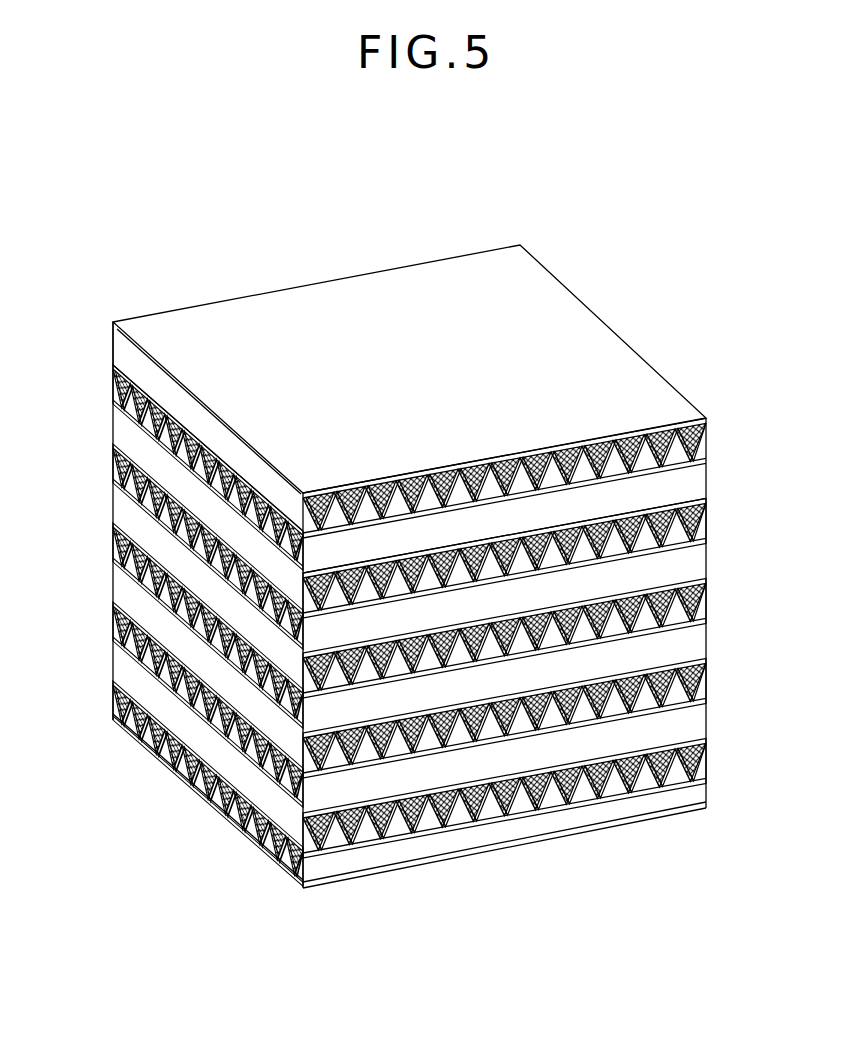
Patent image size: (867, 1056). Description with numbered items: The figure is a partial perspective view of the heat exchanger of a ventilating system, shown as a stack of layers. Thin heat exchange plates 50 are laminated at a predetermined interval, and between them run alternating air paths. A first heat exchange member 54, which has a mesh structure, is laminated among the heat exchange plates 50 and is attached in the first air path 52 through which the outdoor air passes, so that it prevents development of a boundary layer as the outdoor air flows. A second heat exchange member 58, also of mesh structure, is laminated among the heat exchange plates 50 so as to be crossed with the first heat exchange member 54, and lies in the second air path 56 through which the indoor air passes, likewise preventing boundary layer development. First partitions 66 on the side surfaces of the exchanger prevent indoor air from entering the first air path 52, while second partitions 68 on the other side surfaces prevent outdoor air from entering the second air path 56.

The heat exchange plates 50 is at (648, 387).
The first air path 52 is at (546, 495).
The first heat exchange member 54 is at (547, 474).
The second air path 56 is at (167, 462).
The second heat exchange member 58 is at (120, 383).
The first partitions 66 is at (548, 530).
The second partitions 68 is at (135, 358).